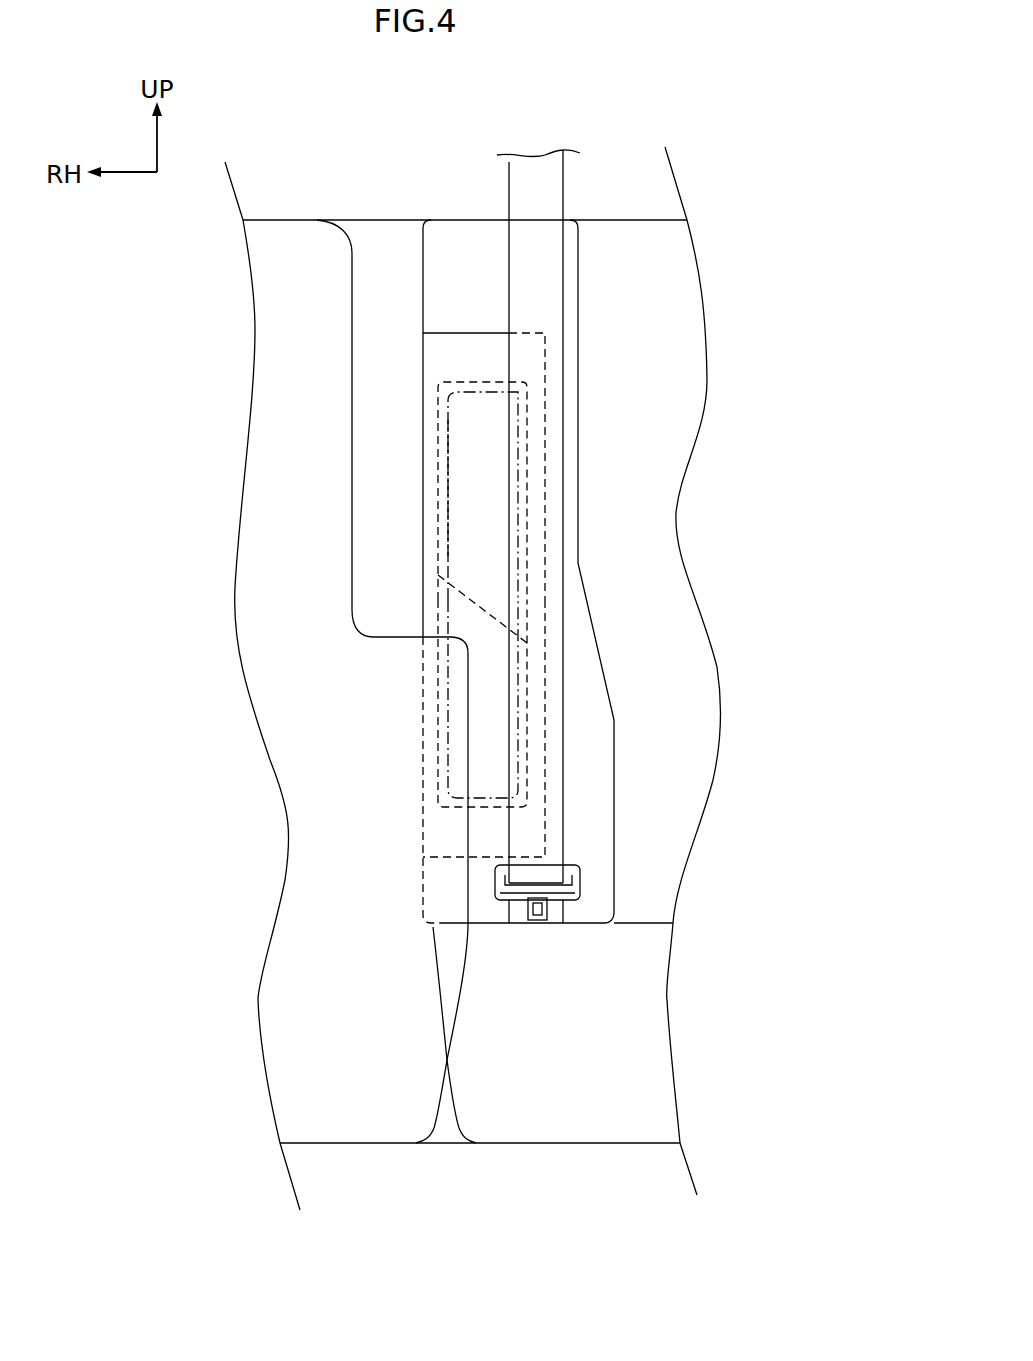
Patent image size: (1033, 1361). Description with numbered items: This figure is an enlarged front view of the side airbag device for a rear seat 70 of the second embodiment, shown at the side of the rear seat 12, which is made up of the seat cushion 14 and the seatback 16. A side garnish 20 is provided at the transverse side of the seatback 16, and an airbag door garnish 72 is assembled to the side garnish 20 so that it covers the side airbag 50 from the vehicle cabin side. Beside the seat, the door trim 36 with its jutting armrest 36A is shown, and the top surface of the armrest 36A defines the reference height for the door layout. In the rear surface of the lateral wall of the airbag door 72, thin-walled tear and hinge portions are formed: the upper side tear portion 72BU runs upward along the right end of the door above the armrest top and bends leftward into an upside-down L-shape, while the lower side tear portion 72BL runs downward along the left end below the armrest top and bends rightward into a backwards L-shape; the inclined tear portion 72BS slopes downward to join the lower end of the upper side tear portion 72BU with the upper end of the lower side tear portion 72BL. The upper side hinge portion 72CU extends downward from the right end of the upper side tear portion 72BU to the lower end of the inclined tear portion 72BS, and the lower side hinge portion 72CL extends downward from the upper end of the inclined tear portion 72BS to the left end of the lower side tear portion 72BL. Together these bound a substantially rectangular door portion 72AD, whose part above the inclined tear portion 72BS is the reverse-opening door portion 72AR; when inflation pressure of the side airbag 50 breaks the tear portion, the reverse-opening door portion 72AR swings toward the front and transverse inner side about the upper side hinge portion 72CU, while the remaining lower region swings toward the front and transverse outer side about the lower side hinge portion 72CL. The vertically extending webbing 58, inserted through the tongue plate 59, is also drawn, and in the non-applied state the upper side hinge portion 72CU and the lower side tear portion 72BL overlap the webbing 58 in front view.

The rear seat 12 is at (627, 220).
The seat cushion 14 is at (558, 1143).
The seatback 16 is at (702, 680).
The side garnish 20 is at (482, 243).
The door trim 36 is at (272, 220).
The armrest 36A is at (402, 634).
The side airbag 50 is at (447, 417).
The webbing 58 is at (565, 683).
The tongue plate 59 is at (578, 890).
The side airbag device for a rear seat 70 is at (447, 220).
The airbag door garnish 72 is at (489, 569).
The reverse-opening door portion 72AR is at (485, 417).
The door portion 72AD is at (488, 743).
The upper side tear portion 72BU is at (440, 537).
The lower side tear portion 72BL is at (527, 740).
The inclined tear portion 72BS is at (548, 585).
The upper side hinge portion 72CU is at (530, 440).
The lower side hinge portion 72CL is at (438, 735).